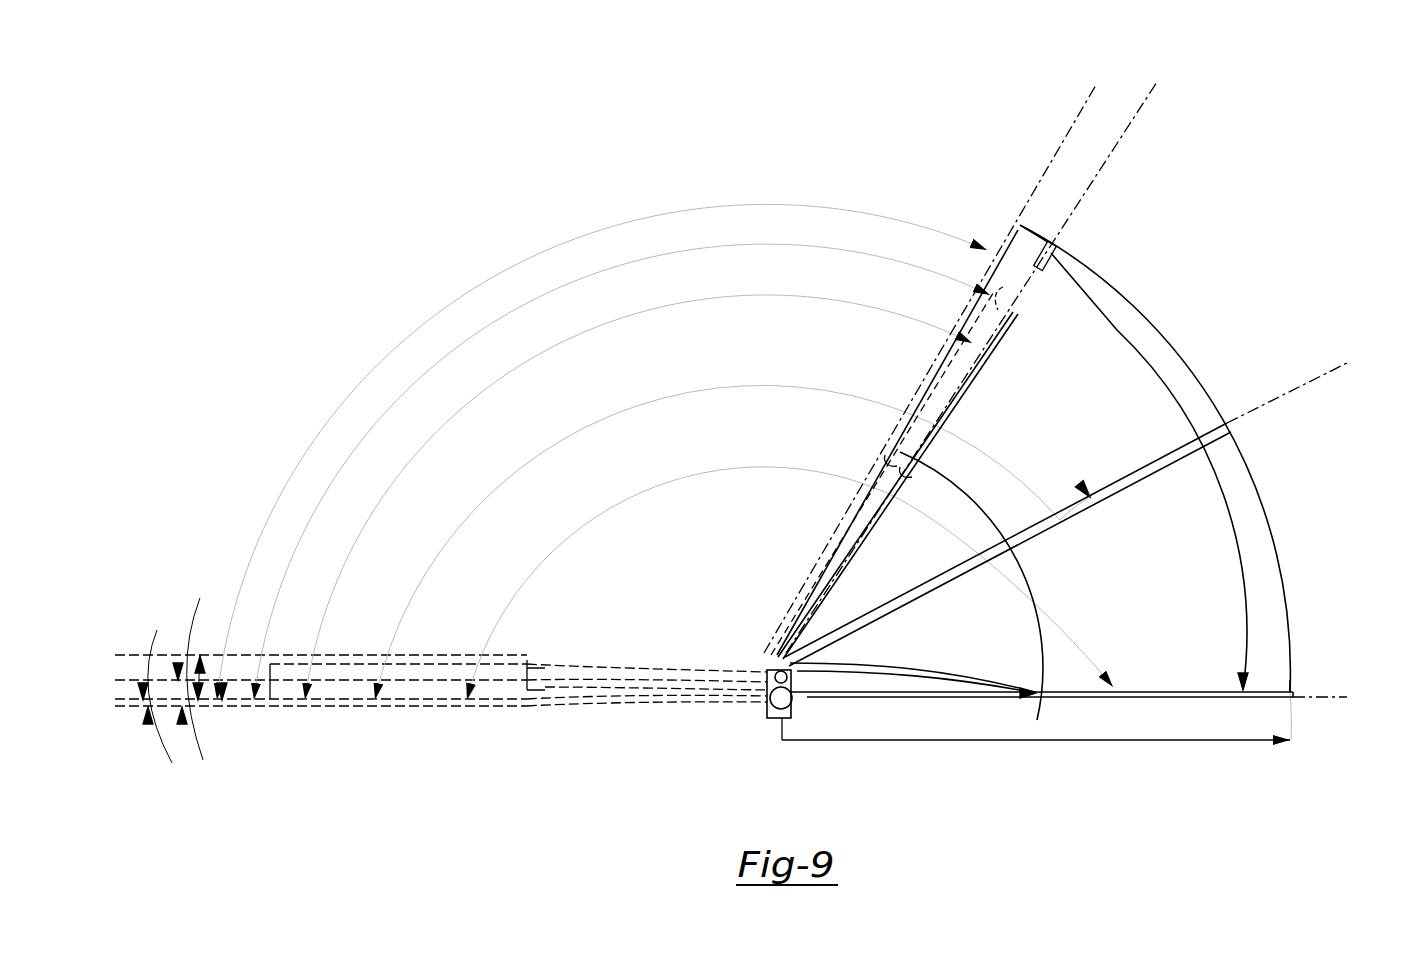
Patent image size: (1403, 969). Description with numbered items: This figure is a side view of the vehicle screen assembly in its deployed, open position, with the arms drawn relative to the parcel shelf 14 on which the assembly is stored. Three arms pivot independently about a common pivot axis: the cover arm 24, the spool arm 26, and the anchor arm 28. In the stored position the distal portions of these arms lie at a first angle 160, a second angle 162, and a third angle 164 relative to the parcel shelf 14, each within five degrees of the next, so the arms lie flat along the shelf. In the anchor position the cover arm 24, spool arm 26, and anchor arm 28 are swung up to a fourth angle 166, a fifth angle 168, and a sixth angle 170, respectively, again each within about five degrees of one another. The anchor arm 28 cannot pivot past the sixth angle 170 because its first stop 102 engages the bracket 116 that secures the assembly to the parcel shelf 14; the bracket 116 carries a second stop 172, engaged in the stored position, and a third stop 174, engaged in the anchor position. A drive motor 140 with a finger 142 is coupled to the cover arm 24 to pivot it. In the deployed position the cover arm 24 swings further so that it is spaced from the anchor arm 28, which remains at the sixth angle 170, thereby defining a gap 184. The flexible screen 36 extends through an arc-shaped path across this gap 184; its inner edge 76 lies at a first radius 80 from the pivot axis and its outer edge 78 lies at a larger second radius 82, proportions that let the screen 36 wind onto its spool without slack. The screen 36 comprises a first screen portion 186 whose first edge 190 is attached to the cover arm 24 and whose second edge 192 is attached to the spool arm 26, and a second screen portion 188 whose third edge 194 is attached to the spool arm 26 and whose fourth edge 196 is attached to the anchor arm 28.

The parcel shelf 14 is at (248, 707).
The cover arm 24 is at (528, 660).
The spool arm 26 is at (557, 690).
The anchor arm 28 is at (447, 715).
The flexible screen 36 is at (1137, 337).
The inner edge 76 is at (990, 522).
The outer edge 78 is at (1278, 557).
The first radius 80 is at (953, 695).
The second radius 82 is at (955, 742).
The first stop 102 is at (767, 690).
The bracket 116 is at (783, 720).
The drive motor 140 is at (765, 700).
The finger 142 is at (800, 698).
The first angle 160 is at (204, 690).
The second angle 162 is at (193, 633).
The third angle 164 is at (157, 750).
The fourth angle 166 is at (555, 363).
The fifth angle 168 is at (453, 355).
The sixth angle 170 is at (370, 372).
The second stop 172 is at (797, 673).
The third stop 174 is at (763, 675).
The gap 184 is at (1240, 555).
The first screen portion 186 is at (1260, 612).
The second screen portion 188 is at (1165, 366).
The first edge 190 is at (1200, 690).
The second edge 192 is at (1172, 462).
The third edge 194 is at (1126, 478).
The fourth edge 196 is at (1000, 292).